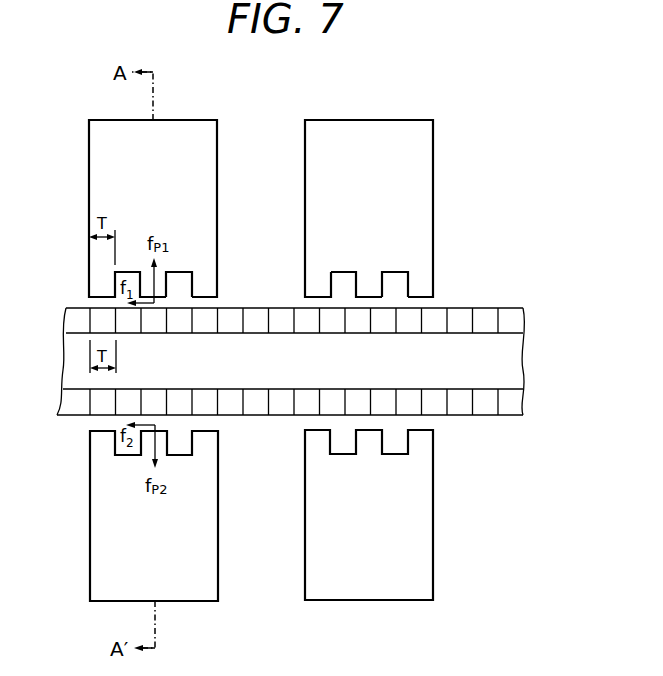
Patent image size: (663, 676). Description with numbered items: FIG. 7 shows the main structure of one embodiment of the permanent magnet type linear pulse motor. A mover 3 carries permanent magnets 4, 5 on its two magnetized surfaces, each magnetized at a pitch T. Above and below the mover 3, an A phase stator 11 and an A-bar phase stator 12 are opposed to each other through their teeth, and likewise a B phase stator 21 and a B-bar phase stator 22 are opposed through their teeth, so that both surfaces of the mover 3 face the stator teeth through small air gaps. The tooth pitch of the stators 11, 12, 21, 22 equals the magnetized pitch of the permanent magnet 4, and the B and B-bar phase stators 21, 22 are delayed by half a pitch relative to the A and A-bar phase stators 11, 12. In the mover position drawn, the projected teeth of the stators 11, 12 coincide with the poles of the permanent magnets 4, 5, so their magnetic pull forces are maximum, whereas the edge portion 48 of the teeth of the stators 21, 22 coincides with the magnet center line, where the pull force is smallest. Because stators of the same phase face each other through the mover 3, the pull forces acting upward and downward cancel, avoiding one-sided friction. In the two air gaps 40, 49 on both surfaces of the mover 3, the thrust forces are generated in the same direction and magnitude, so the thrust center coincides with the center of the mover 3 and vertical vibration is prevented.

The A phase stator 11 is at (97, 155).
The B phase stator 21 is at (425, 150).
The A-bar phase stator 12 is at (100, 538).
The B-bar phase stator 22 is at (415, 547).
The air gap 49 is at (178, 302).
The edge portion of the teeth 48 is at (300, 298).
The air gap 40 is at (395, 300).
The mover 3 is at (512, 358).
The permanent magnet 4 is at (518, 318).
The permanent magnet 5 is at (520, 397).